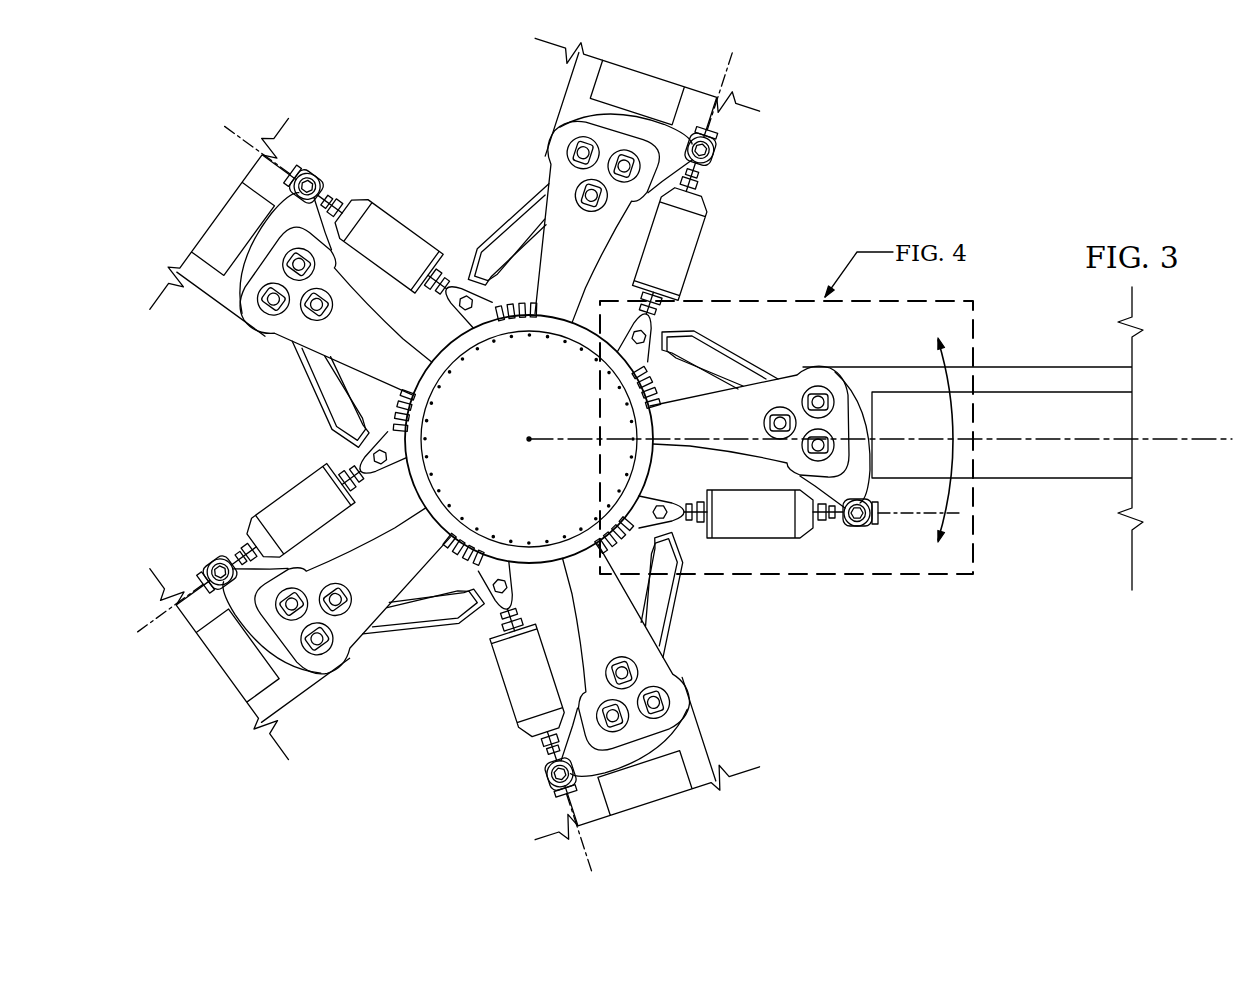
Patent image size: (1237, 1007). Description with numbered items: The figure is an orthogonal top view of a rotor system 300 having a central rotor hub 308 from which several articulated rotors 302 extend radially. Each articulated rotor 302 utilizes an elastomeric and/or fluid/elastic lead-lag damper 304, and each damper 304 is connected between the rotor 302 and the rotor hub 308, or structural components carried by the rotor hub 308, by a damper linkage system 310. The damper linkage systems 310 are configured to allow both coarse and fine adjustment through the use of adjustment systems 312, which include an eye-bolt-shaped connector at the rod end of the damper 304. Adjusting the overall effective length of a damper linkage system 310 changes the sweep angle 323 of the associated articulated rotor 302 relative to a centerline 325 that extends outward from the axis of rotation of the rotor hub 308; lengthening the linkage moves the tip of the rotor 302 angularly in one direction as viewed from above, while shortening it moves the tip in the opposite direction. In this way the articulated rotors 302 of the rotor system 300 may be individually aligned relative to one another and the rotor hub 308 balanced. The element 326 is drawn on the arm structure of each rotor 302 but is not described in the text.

The rotor system 300 is at (933, 100).
The articulated rotor 302 is at (563, 100).
The lead-lag damper 304 is at (405, 228).
The rotor hub 308 is at (656, 447).
The damper linkage system 310 is at (410, 148).
The adjustment system 312 is at (342, 155).
The sweep angle 323 is at (965, 497).
The centerline 325 is at (1155, 445).
The blade grip arm 326 is at (637, 130).